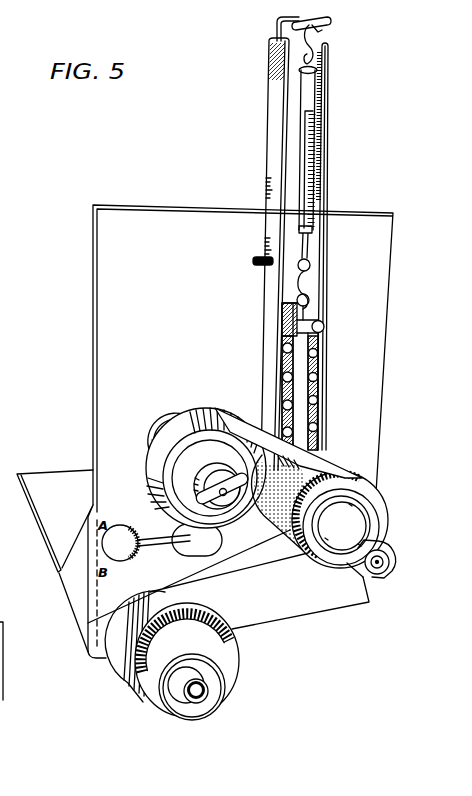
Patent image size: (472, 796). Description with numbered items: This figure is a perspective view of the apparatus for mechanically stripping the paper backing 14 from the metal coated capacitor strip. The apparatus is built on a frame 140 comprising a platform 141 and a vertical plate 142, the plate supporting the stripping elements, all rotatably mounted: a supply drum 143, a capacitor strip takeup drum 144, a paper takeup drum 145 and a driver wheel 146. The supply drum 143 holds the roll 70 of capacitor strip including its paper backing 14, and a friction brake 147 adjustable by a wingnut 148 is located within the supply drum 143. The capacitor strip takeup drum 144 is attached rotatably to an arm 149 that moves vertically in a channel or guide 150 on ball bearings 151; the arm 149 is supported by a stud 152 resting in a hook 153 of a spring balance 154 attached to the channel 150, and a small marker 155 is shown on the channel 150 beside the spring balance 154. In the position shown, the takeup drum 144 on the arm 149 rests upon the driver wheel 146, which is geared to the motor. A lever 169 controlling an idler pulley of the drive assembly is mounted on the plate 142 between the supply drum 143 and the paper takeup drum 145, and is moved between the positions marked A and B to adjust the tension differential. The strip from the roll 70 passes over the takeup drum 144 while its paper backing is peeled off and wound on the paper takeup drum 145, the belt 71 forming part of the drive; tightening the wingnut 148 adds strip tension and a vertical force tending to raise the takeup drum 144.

The paper backing 14 is at (237, 567).
The roll 70 is at (185, 422).
The belt 71 is at (264, 438).
The frame 140 is at (82, 613).
The platform 141 is at (37, 480).
The vertical plate 142 is at (115, 213).
The supply drum 143 is at (198, 456).
The capacitor strip takeup drum 144 is at (371, 510).
The paper takeup drum 145 is at (166, 713).
The driver wheel 146 is at (382, 548).
The friction brake 147 is at (200, 483).
The wingnut 148 is at (202, 500).
The arm 149 is at (298, 396).
The channel or guide 150 is at (272, 95).
The ball bearings 151 is at (313, 366).
The stud 152 is at (319, 326).
The hook 153 is at (308, 300).
The spring balance 154 is at (305, 133).
The indicator 155 is at (258, 258).
The lever 169 is at (113, 532).